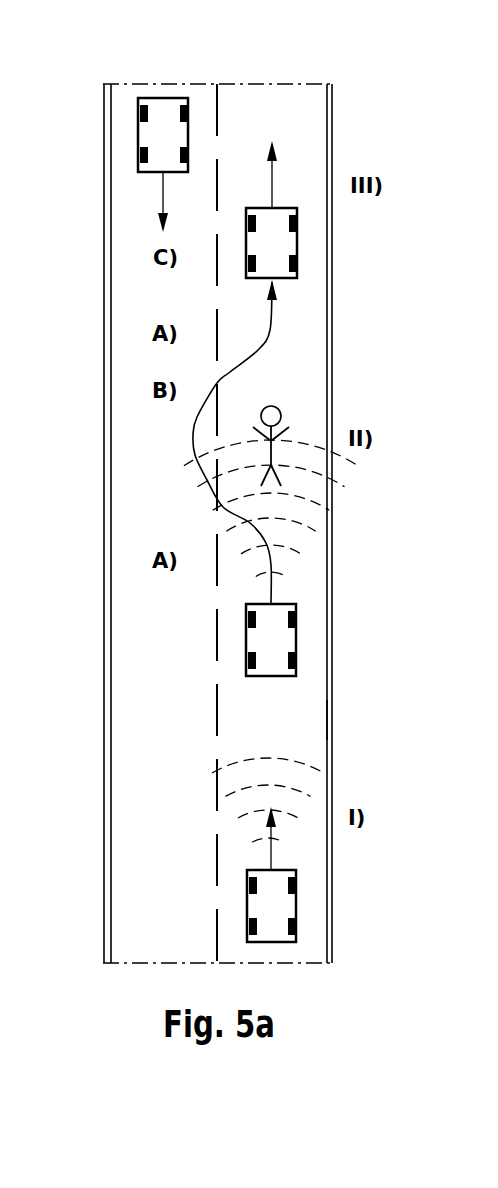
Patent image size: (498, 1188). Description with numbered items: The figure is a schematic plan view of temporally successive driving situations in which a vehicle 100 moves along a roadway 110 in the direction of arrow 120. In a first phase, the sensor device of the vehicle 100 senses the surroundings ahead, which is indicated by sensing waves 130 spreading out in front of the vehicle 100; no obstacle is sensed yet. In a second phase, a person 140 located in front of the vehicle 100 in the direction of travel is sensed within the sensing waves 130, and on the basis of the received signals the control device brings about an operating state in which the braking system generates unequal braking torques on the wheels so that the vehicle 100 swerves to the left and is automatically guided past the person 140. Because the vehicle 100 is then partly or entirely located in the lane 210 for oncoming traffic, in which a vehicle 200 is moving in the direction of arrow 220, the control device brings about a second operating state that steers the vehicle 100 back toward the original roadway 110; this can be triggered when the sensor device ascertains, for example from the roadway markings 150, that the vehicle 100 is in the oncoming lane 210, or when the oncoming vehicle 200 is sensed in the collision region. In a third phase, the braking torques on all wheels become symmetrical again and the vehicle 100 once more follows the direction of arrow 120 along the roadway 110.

The vehicle 100 is at (297, 243).
The roadway 110 is at (305, 718).
The arrow 120 is at (272, 168).
The sensing waves 130 is at (295, 816).
The person 140 is at (300, 407).
The roadway markings 150 is at (216, 325).
The vehicle 200 is at (162, 97).
The lane for oncoming traffic 210 is at (135, 294).
The arrow 220 is at (162, 193).